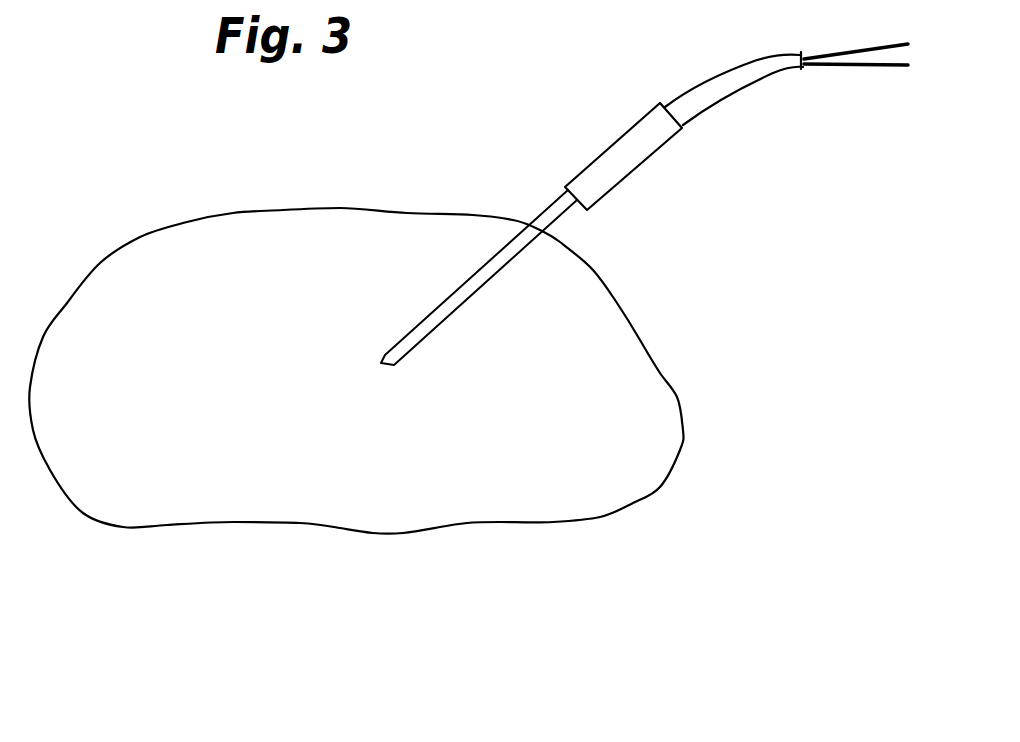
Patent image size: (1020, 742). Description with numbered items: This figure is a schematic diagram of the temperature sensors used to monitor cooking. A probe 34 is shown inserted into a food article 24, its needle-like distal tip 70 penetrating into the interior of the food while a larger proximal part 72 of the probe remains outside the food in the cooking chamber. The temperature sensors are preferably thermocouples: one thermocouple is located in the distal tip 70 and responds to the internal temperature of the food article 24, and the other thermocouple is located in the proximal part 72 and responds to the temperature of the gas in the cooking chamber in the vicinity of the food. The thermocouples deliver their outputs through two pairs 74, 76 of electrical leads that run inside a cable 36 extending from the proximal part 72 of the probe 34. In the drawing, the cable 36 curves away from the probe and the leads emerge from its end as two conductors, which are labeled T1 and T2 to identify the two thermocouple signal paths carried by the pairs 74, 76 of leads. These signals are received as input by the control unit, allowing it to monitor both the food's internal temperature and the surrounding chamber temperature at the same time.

The food article 24 is at (187, 222).
The probe 34 is at (612, 183).
The cable 36 is at (728, 68).
The distal tip 70 is at (407, 335).
The proximal part 72 is at (637, 167).
The pair of electrical leads 74 is at (834, 30).
The pair of electrical leads 76 is at (844, 100).
The first thermocouple wire T1 is at (835, 50).
The second thermocouple wire T2 is at (853, 65).